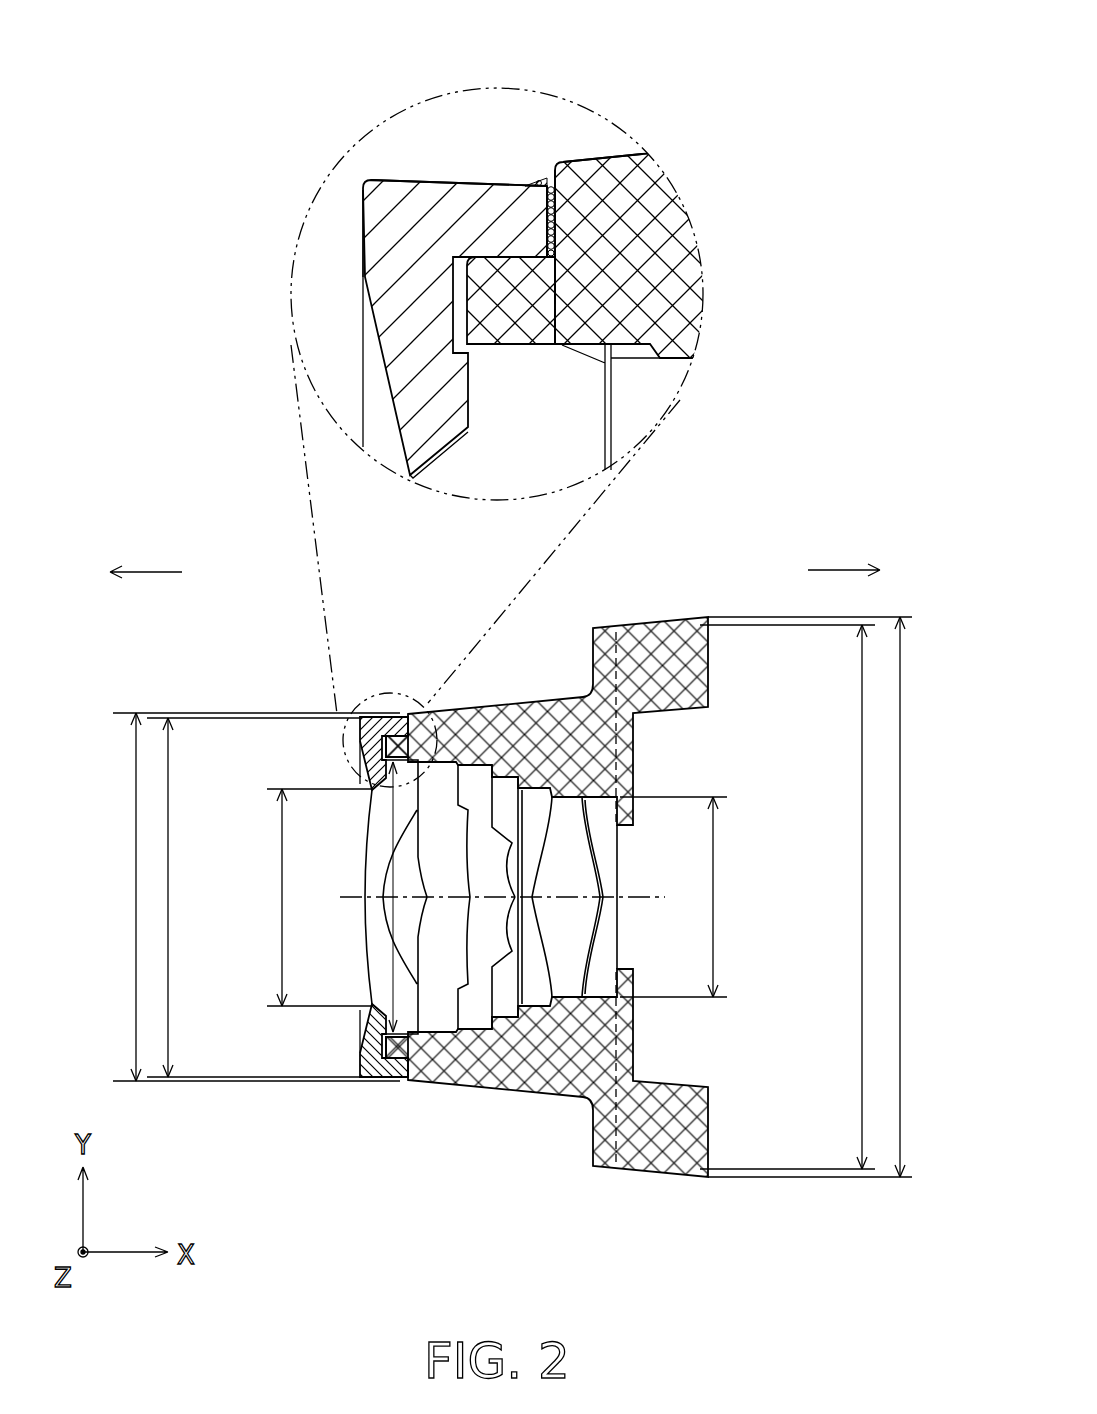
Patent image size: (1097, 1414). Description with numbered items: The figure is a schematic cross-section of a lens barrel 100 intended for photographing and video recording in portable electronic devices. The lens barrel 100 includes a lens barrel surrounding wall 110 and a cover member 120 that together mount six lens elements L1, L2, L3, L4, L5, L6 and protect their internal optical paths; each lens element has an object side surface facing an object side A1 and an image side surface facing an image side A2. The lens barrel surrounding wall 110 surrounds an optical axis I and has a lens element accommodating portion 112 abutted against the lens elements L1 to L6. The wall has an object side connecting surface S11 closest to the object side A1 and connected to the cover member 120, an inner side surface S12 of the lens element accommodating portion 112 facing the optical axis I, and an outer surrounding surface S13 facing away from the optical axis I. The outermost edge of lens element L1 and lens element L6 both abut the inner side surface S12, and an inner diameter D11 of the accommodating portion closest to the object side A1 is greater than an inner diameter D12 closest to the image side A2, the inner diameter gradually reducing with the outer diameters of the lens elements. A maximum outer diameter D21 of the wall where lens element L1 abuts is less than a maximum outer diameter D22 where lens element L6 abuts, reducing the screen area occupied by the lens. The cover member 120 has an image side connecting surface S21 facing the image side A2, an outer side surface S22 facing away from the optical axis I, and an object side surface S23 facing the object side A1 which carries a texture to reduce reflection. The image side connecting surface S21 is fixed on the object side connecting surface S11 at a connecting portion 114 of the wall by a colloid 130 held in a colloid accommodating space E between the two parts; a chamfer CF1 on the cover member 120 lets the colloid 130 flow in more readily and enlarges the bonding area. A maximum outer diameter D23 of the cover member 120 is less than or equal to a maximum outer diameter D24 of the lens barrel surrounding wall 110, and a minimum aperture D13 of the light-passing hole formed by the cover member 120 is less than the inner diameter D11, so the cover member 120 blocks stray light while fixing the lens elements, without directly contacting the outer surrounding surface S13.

The lens barrel 100 is at (850, 1311).
The lens barrel surrounding wall 110 is at (658, 610).
The lens element accommodating portion 112 is at (517, 740).
The connecting portion 114 is at (398, 738).
The cover member 120 is at (363, 748).
The colloid 130 is at (533, 176).
The colloid accommodating space E is at (547, 167).
The chamfer CF1 is at (520, 183).
The object side connecting surface S11 is at (563, 217).
The inner side surface S12 is at (590, 338).
The outer surrounding surface S13 is at (612, 153).
The image side connecting surface S21 is at (545, 212).
The outer side surface S22 is at (410, 178).
The object side surface S23 is at (362, 247).
The lens element L1 is at (408, 1020).
The lens element L2 is at (440, 1020).
The lens element L3 is at (475, 1020).
The lens element L4 is at (530, 1000).
The lens element L5 is at (560, 985).
The lens element L6 is at (600, 970).
The optical axis I is at (511, 897).
The inner diameter D11 is at (393, 962).
The inner diameter D12 is at (688, 897).
The minimum aperture D13 is at (301, 897).
The maximum outer diameter D21 is at (240, 897).
The maximum outer diameter D22 is at (787, 897).
The maximum outer diameter D23 is at (253, 897).
The maximum outer diameter D24 is at (826, 897).
The object side A1 is at (146, 555).
The image side A2 is at (844, 554).